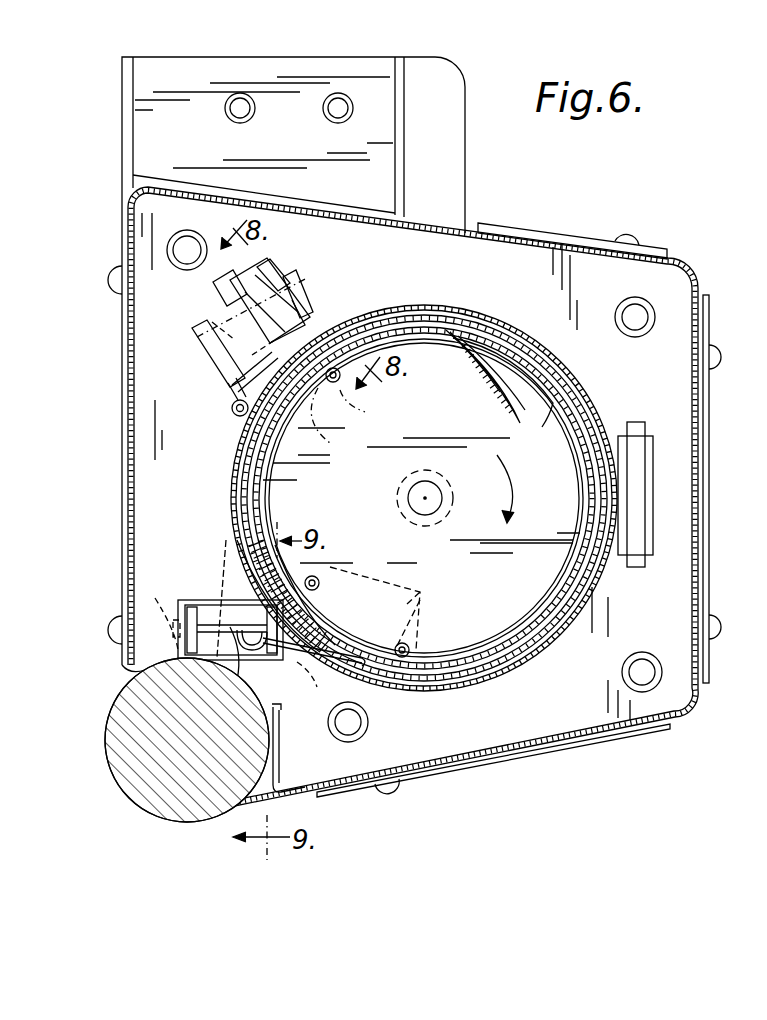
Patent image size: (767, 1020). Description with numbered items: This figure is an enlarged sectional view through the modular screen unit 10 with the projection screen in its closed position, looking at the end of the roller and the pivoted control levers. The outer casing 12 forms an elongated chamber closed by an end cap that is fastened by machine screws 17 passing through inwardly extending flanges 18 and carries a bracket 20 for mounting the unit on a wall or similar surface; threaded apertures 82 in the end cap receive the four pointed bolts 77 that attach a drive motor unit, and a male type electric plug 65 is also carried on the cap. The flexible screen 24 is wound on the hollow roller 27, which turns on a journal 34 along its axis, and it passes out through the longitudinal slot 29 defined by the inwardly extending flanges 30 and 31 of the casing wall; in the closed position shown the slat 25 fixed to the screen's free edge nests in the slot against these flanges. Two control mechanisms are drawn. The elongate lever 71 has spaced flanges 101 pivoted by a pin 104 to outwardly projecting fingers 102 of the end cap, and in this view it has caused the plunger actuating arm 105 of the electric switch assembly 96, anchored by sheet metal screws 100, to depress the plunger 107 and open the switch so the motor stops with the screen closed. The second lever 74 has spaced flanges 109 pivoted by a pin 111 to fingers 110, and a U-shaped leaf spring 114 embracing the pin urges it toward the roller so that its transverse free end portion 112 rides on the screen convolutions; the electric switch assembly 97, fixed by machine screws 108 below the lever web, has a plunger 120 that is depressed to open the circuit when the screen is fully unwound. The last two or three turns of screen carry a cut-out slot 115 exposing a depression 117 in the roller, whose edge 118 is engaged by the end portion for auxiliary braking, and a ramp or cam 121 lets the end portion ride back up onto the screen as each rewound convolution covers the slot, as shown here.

The modular screen unit 10 is at (687, 240).
The outer casing 12 is at (697, 373).
The machine screws 17 is at (628, 236).
The inwardly extending flanges 18 is at (560, 230).
The bracket 20 is at (305, 150).
The flexible screen 24 is at (573, 372).
The slat 25 is at (147, 790).
The roller 27 is at (583, 491).
The longitudinal slot 29 is at (756, 808).
The inwardly extending flange 30 is at (127, 672).
The inwardly extending flange 31 is at (280, 758).
The journal 34 is at (433, 496).
The male type electric plug 65 is at (637, 503).
The pivoted lever 71 is at (238, 668).
The pivoted lever 74 is at (210, 350).
The bolts 77 is at (187, 242).
The threaded apertures 82 is at (172, 266).
The electric switch assembly 96 is at (420, 592).
The electric switch assembly 97 is at (400, 442).
The sheet metal screws 100 is at (330, 567).
The upwardly extending spaced flanges 101 is at (210, 600).
The outwardly projecting fingers 102 is at (180, 613).
The pin 104 is at (214, 662).
The plunger actuating arm 105 is at (360, 660).
The plunger 107 is at (318, 640).
The machine screws 108 is at (232, 416).
The upwardly extending spaced flanges 109 is at (262, 262).
The outwardly projecting fingers 110 is at (297, 297).
The pin 111 is at (290, 276).
The free end portion 112 is at (284, 323).
The U-shaped leaf spring 114 is at (213, 308).
The cut-out slot 115 is at (500, 332).
The depression 117 is at (517, 360).
The edge 118 is at (548, 418).
The plunger 120 is at (230, 390).
The ramp or cam 121 is at (510, 400).